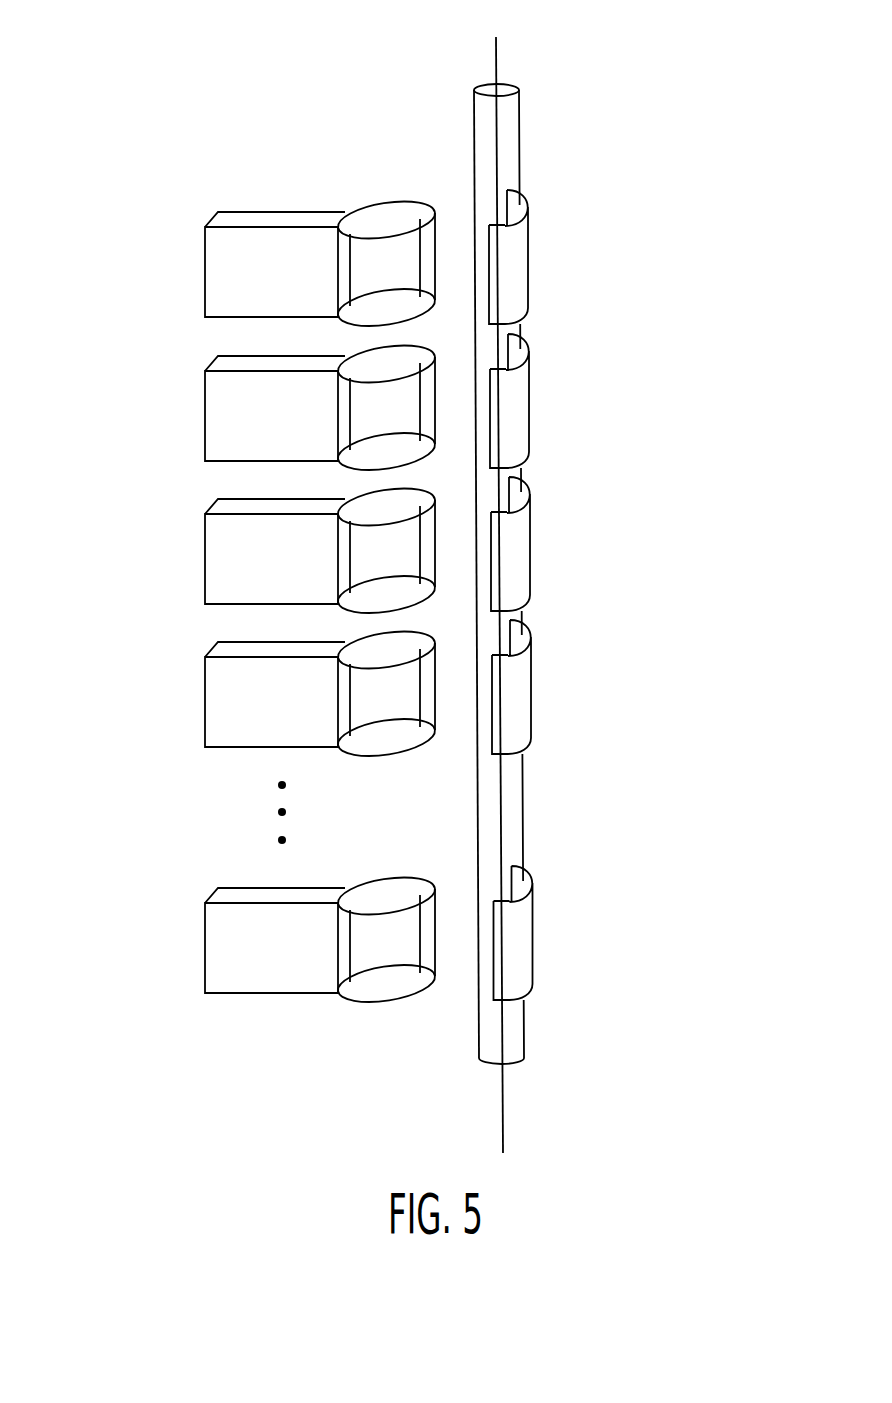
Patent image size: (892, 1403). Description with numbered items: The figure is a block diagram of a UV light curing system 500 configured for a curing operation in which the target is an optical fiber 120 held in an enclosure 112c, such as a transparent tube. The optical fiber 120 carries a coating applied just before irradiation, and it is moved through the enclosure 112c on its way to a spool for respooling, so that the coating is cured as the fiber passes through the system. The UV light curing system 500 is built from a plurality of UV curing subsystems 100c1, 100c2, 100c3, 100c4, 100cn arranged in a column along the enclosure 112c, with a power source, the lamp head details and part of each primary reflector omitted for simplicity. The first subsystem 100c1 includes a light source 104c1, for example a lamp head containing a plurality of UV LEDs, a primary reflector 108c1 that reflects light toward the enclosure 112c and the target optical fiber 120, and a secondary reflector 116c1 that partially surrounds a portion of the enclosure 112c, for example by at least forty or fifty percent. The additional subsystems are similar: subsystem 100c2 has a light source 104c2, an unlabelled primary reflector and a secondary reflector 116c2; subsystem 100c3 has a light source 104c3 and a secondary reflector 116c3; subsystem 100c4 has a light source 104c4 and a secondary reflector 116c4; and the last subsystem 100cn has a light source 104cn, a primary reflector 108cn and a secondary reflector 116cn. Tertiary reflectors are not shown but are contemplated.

The UV light curing system 500 is at (224, 98).
The UV curing subsystem 100c1 is at (203, 262).
The UV curing subsystem 100c2 is at (204, 406).
The UV curing subsystem 100c3 is at (204, 549).
The UV curing subsystem 100c4 is at (204, 692).
The UV curing subsystem 100cn is at (204, 938).
The light source 104c1 is at (300, 283).
The light source 104c2 is at (300, 427).
The light source 104c3 is at (300, 570).
The light source 104c4 is at (300, 713).
The light source 104cn is at (302, 959).
The primary reflector 108c1 is at (392, 200).
The primary reflector 108cn is at (378, 1002).
The enclosure 112c is at (508, 129).
The secondary reflector 116c1 is at (513, 268).
The secondary reflector 116c2 is at (522, 408).
The secondary reflector 116c3 is at (522, 555).
The secondary reflector 116c4 is at (518, 690).
The secondary reflector 116cn is at (522, 923).
The optical fiber 120 is at (503, 1107).